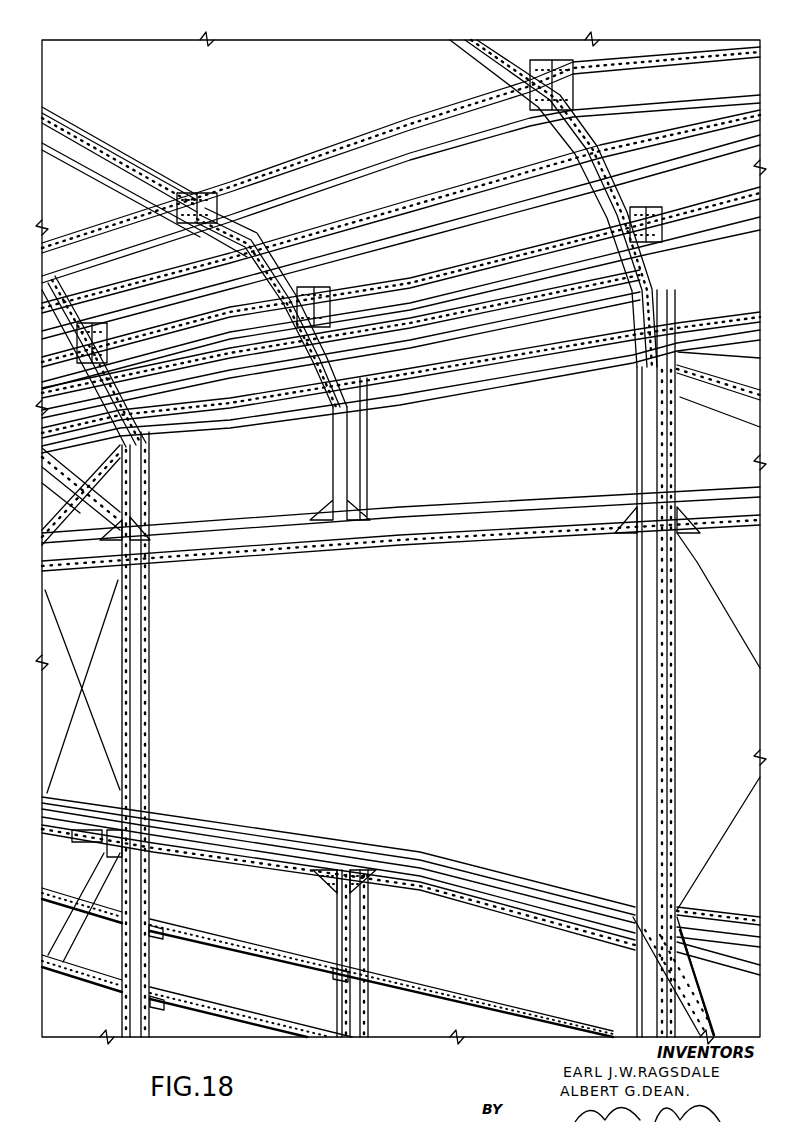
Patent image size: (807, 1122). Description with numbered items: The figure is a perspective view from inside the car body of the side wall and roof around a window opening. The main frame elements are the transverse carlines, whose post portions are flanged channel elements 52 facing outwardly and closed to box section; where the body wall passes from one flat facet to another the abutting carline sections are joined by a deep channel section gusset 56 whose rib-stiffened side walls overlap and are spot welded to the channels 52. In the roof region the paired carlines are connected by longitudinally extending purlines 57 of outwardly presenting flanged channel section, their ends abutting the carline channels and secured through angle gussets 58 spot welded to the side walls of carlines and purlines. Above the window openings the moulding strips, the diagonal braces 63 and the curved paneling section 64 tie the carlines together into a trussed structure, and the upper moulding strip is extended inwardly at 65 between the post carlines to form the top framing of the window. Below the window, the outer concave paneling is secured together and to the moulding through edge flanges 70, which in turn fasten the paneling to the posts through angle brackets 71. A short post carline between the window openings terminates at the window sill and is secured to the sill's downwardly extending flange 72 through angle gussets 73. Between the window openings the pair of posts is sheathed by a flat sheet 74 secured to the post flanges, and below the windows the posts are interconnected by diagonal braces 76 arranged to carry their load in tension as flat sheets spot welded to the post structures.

The flanged channel element 52 is at (138, 505).
The deep channel section gusset 56 is at (600, 200).
The purline 57 is at (686, 58).
The angle gusset 58 is at (532, 86).
The diagonal brace 63 is at (102, 508).
The curved paneling section 64 is at (488, 494).
The inward extension of moulding strip 65 is at (362, 948).
The edge flange 70 is at (232, 936).
The angle bracket 71 is at (160, 936).
The downwardly extending flange 72 is at (402, 878).
The angle gusset 73 is at (322, 882).
The flat sheet 74 is at (92, 772).
The diagonal brace 76 is at (56, 920).